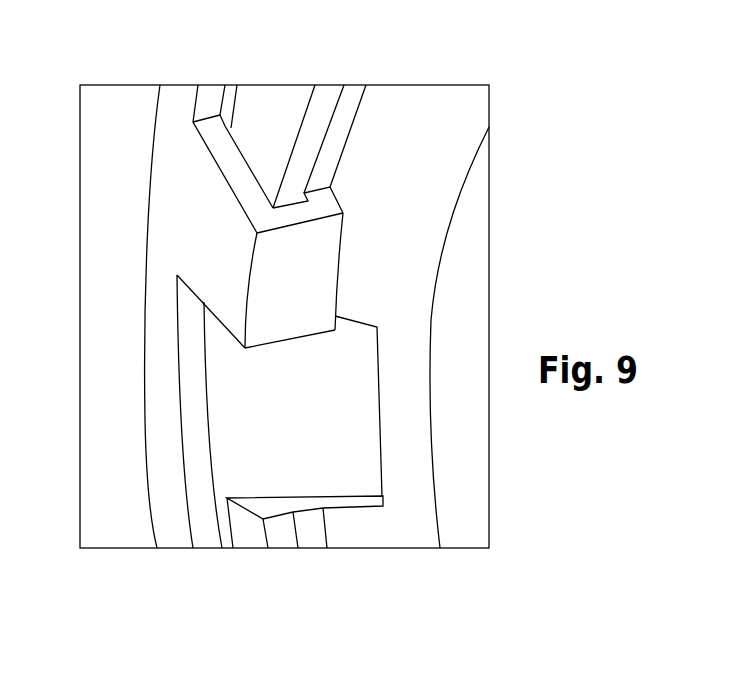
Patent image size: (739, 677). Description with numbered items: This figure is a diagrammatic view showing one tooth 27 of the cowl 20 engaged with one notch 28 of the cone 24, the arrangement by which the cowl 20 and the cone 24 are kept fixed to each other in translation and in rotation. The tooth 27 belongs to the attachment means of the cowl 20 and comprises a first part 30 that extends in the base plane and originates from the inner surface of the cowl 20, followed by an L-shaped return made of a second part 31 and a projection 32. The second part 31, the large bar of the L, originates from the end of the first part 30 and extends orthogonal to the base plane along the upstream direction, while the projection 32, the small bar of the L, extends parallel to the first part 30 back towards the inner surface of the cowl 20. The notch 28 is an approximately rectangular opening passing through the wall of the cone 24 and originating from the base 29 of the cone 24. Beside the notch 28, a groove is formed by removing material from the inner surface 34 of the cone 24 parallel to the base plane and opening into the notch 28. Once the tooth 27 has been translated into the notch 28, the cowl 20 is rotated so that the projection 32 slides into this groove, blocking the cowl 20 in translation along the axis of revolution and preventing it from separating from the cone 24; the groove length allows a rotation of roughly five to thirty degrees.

The cowl 20 is at (192, 575).
The cone 24 is at (294, 575).
The tooth 27 is at (203, 296).
The notch 28 is at (355, 482).
The base of the cone 29 is at (273, 122).
The first part 30 is at (213, 214).
The second part 31 is at (264, 335).
The projection 32 is at (332, 203).
The inner surface of the cone 34 is at (348, 120).